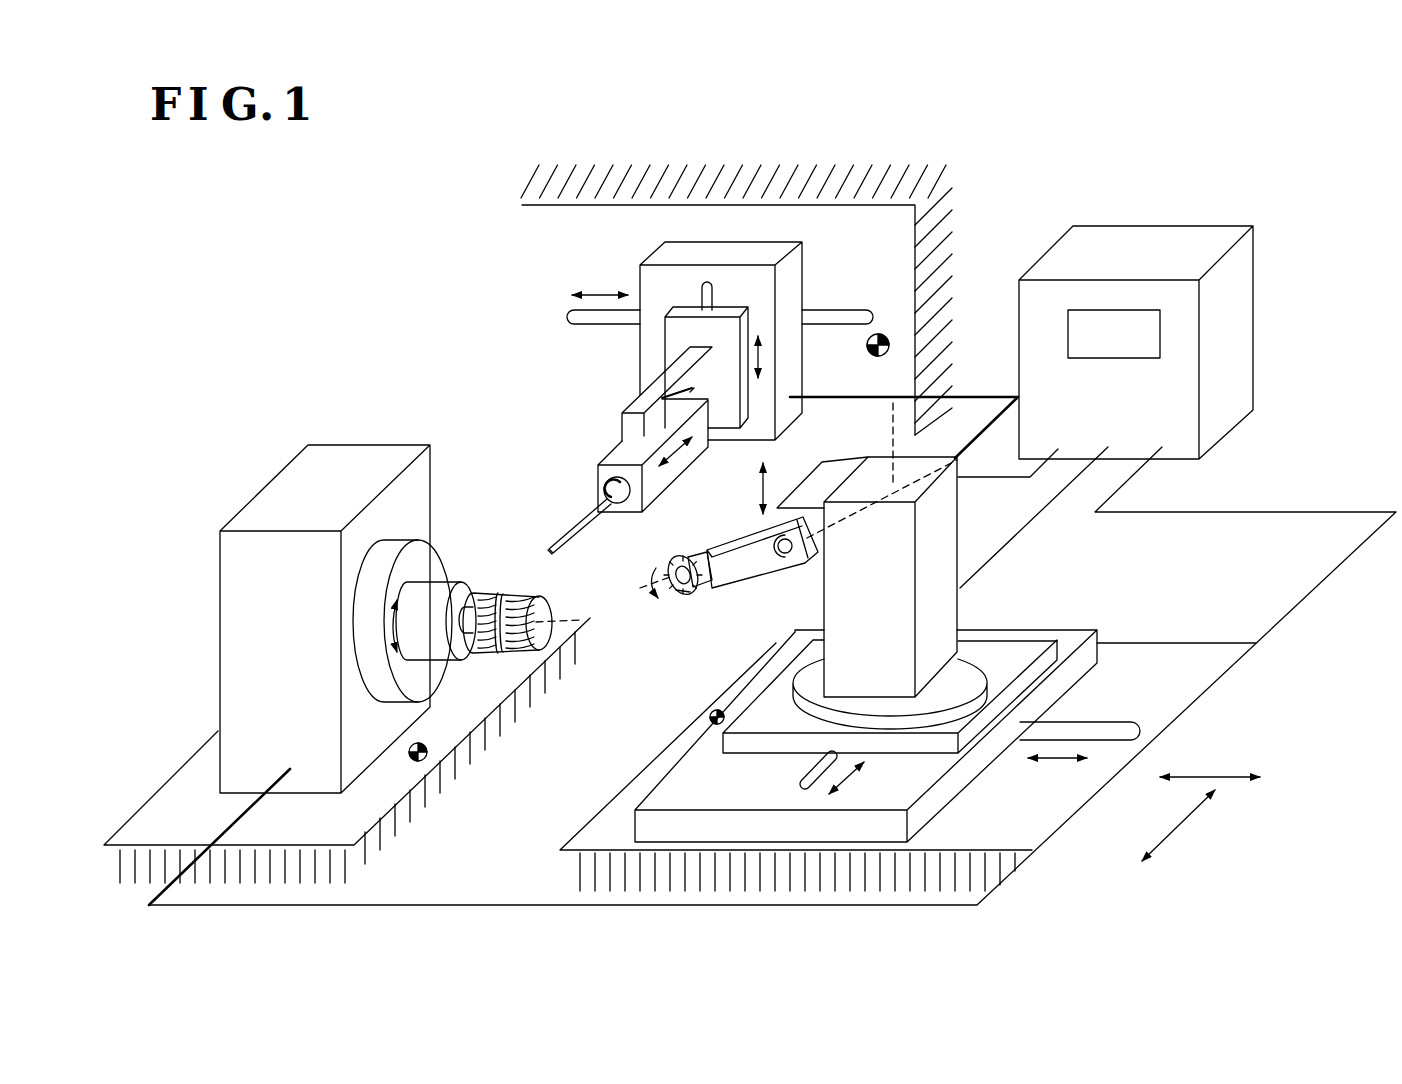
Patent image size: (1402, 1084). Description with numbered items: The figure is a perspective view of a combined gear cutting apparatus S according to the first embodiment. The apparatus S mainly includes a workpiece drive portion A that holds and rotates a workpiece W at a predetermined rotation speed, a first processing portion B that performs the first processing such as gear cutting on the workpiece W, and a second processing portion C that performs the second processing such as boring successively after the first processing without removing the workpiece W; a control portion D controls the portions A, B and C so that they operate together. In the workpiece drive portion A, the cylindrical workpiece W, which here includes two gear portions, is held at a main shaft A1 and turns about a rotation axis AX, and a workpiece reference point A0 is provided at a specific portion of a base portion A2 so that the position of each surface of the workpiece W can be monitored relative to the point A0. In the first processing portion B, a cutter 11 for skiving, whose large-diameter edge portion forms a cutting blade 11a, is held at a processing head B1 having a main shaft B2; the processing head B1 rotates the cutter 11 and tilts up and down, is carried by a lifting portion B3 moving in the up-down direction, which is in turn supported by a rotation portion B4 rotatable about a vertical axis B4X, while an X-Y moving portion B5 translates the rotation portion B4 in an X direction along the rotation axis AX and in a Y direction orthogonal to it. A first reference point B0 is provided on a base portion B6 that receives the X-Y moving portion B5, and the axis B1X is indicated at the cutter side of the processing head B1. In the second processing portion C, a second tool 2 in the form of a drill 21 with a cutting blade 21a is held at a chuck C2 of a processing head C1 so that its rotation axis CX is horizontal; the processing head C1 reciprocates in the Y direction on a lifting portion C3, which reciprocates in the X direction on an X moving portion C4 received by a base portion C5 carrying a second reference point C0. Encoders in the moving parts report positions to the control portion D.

The combined gear cutting apparatus S is at (387, 333).
The workpiece drive portion A is at (230, 488).
The workpiece reference point A0 is at (422, 761).
The main shaft A1 is at (430, 650).
The base portion A2 is at (180, 791).
The rotation axis AX is at (545, 630).
The workpiece W is at (527, 595).
The drill 21 is at (581, 509).
The second tool 2 is at (550, 497).
The cutting blade 21a is at (566, 540).
The second processing portion C is at (555, 277).
The second reference point C0 is at (886, 337).
The processing head C1 is at (633, 448).
The chuck C2 is at (606, 478).
The lifting portion C3 is at (720, 340).
The X moving portion C4 is at (757, 255).
The base portion C5 is at (638, 243).
The rotation axis CX is at (655, 592).
The control portion D is at (1213, 327).
The first processing portion B is at (1007, 612).
The first reference point B0 is at (710, 717).
The processing head B1 is at (727, 567).
The tool rotation axis B1X is at (665, 595).
The main shaft B2 is at (702, 548).
The lifting portion B3 is at (823, 483).
The rotation portion B4 is at (935, 612).
The vertical axis B4X is at (897, 417).
The X-Y moving portion B5 is at (1000, 668).
The base portion B6 is at (1032, 803).
The cutter 11 is at (677, 552).
The cutting blade 11a is at (683, 603).
The X direction X is at (1224, 781).
The Y direction Y is at (1178, 829).